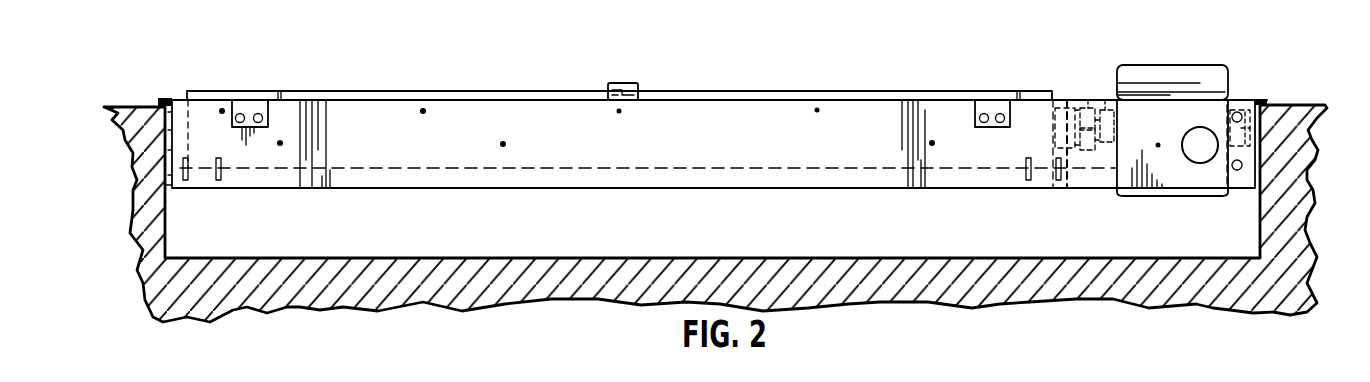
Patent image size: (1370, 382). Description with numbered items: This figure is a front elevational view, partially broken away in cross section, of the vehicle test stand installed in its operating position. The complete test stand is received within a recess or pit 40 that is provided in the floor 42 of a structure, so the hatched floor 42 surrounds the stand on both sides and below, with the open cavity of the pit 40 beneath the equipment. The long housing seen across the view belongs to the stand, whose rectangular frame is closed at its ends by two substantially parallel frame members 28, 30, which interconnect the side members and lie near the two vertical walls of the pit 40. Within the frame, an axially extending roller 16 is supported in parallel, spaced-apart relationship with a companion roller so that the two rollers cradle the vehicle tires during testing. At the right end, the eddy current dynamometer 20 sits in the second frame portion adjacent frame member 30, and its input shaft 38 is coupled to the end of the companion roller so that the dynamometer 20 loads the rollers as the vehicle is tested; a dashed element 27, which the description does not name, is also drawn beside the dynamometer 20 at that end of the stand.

The roller 16 is at (672, 143).
The eddy current dynamometer 20 is at (1178, 131).
The connector 27 is at (1078, 100).
The frame member 28 is at (165, 100).
The frame member 30 is at (1264, 100).
The input shaft 38 is at (1097, 100).
The recess or pit 40 is at (673, 235).
The floor 42 is at (1302, 105).